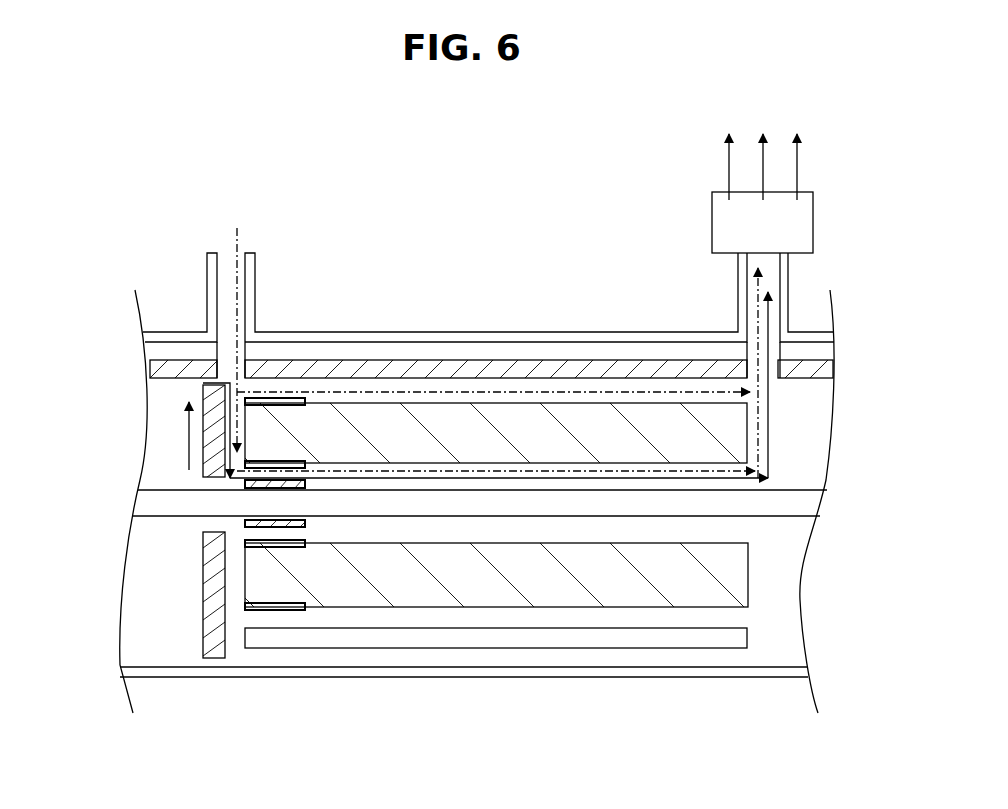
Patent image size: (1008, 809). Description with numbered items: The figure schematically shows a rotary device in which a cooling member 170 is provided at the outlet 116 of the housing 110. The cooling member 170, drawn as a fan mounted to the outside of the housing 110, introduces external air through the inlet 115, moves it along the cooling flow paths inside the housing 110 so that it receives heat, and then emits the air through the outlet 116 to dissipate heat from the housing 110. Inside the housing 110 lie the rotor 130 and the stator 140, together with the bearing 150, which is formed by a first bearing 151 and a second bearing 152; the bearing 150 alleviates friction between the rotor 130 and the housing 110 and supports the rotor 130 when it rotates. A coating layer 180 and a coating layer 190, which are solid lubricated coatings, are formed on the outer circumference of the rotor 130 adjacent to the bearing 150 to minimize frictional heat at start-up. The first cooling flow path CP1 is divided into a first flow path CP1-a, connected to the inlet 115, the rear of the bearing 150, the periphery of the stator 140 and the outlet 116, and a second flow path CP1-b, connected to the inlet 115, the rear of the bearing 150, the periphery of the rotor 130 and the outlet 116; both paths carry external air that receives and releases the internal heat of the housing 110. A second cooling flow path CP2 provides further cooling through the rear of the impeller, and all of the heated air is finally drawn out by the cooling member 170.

The housing 110 is at (505, 330).
The inlet 115 is at (245, 252).
The outlet 116 is at (773, 318).
The rotor 130 is at (808, 502).
The stator 140 is at (625, 422).
The bearing 150 is at (161, 521).
The first bearing 151 is at (245, 483).
The second bearing 152 is at (213, 450).
The cooling member 170 is at (805, 225).
The coating layer 180 is at (588, 362).
The coating layer 190 is at (277, 398).
The first cooling flow path CP1 is at (237, 240).
The first flow path CP1-a is at (335, 395).
The second flow path CP1-b is at (415, 470).
The second cooling flow path CP2 is at (185, 425).